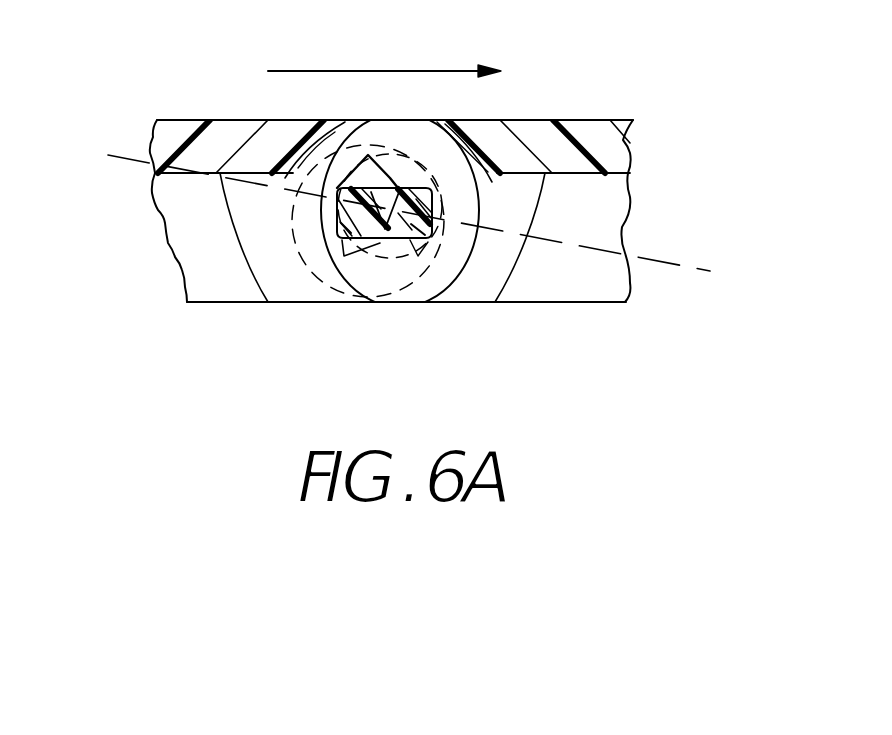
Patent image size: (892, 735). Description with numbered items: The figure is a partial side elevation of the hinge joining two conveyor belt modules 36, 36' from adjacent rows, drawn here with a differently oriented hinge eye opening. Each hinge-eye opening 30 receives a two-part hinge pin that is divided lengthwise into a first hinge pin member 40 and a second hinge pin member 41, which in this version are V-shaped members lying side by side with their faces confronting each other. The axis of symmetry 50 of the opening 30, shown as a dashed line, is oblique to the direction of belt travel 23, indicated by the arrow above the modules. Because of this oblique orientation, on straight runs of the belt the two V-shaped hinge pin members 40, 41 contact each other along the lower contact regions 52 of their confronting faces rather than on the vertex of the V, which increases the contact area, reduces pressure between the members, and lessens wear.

The direction of belt travel 23 is at (417, 70).
The hinge-eye opening 30 is at (351, 176).
The belt module 36 is at (240, 173).
The belt module 36' is at (596, 191).
The first hinge pin member 40 is at (339, 234).
The second hinge pin member 41 is at (424, 238).
The axis of symmetry 50 is at (679, 264).
The lower contact regions 52 is at (388, 240).